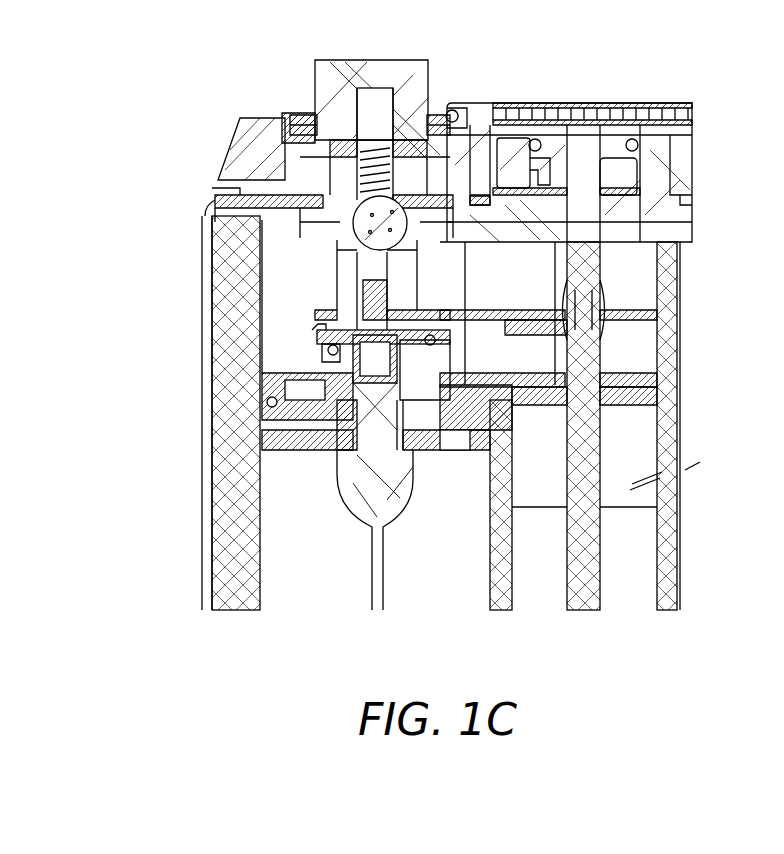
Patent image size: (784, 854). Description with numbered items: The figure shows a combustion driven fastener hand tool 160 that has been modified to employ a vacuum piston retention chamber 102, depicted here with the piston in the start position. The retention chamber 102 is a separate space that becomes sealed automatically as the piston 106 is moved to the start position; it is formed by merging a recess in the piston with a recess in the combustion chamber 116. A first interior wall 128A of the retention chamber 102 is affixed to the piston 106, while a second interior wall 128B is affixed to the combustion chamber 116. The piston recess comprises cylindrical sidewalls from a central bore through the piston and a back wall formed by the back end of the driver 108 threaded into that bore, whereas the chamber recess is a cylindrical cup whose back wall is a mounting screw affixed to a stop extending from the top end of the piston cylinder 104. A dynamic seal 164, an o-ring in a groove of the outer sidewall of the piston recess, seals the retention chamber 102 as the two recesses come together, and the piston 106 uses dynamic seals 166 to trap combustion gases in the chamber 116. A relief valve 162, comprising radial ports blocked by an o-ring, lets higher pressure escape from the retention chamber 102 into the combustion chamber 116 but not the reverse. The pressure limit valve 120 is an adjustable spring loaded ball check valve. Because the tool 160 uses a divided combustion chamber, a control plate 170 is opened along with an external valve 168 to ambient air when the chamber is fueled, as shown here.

The combustion driven fastener hand tool 160 is at (598, 140).
The external valve 168 is at (618, 140).
The pressure limit valve 120 is at (365, 222).
The combustion chamber 116 is at (262, 250).
The second interior wall 128B is at (368, 333).
The relief valve 162 is at (318, 333).
The dynamic seal 164 is at (330, 352).
The retention chamber 102 is at (358, 366).
The piston 106 is at (262, 378).
The dynamic seals 166 is at (268, 403).
The first interior wall 128A is at (372, 385).
The piston cylinder 104 is at (235, 507).
The driver 108 is at (378, 582).
The control plate 170 is at (613, 328).